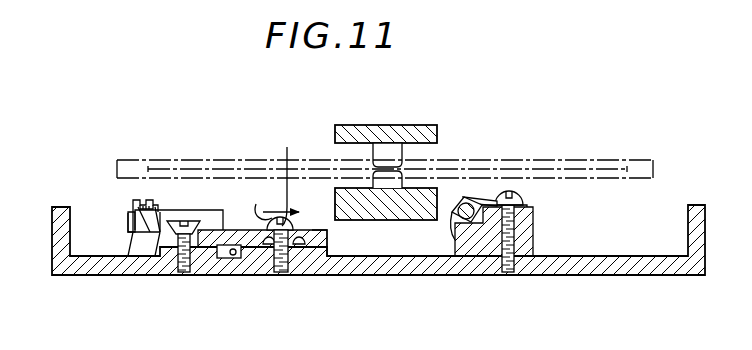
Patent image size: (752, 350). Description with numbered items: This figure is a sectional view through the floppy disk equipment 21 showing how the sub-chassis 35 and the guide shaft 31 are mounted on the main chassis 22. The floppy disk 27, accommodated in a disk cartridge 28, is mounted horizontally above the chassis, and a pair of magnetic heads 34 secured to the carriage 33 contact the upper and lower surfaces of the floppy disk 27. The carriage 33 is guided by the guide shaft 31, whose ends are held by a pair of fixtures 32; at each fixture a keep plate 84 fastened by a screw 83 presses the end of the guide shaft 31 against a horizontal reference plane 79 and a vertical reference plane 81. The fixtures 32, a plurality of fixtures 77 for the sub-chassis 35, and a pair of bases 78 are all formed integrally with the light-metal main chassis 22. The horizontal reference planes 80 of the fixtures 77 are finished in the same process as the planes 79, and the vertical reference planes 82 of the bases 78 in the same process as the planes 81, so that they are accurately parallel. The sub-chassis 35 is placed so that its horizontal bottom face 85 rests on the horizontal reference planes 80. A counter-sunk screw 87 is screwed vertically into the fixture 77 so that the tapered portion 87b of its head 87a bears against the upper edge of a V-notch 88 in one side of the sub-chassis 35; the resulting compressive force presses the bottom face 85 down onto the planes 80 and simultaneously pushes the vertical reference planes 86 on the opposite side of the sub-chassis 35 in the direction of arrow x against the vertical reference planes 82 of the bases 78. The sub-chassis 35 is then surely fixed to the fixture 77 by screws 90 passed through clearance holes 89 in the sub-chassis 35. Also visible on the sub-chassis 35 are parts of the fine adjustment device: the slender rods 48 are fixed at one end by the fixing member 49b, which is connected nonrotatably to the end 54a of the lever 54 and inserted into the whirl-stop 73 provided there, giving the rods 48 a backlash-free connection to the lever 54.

The floppy disk equipment 21 is at (82, 168).
The main chassis 22 is at (623, 272).
The floppy disk 27 is at (587, 168).
The disk cartridge 28 is at (537, 158).
The guide shaft 31 is at (466, 222).
The fixtures 32 is at (532, 232).
The carriage 33 is at (420, 207).
The magnetic heads 34 is at (392, 183).
The sub-chassis 35 is at (228, 230).
The slender rods 48 is at (147, 236).
The fixing member 49b is at (138, 207).
The lever 54 is at (170, 212).
The one end of lever 54a is at (128, 224).
The whirl-stop 73 is at (136, 208).
The fixtures 77 is at (177, 246).
The bases 78 is at (316, 230).
The horizontal reference planes 79 is at (458, 218).
The horizontal reference planes 80 is at (219, 258).
The vertical reference planes 81 is at (478, 238).
The vertical reference planes 82 is at (322, 100).
The screws 83 is at (497, 200).
The keep plates 84 is at (464, 198).
The horizontal bottom face 85 is at (244, 230).
The vertical reference planes 86 is at (318, 238).
The counter-sunk screw 87 is at (182, 222).
The head 87a is at (205, 230).
The tapered portion 87b is at (177, 275).
The V-notch 88 is at (197, 252).
The clearance holes 89 is at (282, 242).
The screws 90 is at (277, 181).